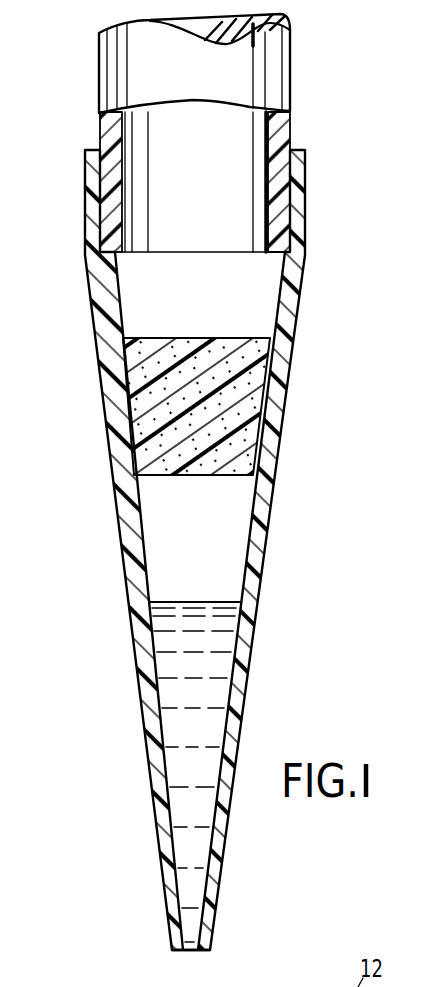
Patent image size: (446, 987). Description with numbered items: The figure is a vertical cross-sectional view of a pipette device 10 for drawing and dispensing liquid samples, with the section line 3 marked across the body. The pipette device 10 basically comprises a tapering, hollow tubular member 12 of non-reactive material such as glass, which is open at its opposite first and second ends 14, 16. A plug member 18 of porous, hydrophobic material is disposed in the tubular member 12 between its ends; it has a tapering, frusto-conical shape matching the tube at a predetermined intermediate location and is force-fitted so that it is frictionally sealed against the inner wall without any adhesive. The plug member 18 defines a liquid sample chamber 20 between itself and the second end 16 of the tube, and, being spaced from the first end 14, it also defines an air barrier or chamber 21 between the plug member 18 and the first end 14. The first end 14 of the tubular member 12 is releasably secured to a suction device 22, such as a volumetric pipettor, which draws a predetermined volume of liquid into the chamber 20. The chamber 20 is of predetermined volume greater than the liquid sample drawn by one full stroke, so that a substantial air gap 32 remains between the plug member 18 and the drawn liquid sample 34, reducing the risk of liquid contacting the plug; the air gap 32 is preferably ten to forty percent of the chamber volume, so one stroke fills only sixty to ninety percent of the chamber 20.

The pipette device 10 is at (197, 499).
The tubular member 12 is at (250, 617).
The first end 14 is at (295, 150).
The second end 16 is at (180, 952).
The plug member 18 is at (133, 437).
The liquid sample chamber 20 is at (205, 573).
The air barrier or chamber 21 is at (263, 282).
The suction device 22 is at (290, 115).
The air gap 32 is at (152, 508).
The liquid sample 34 is at (160, 662).
The section line 3- 3 is at (85, 425).